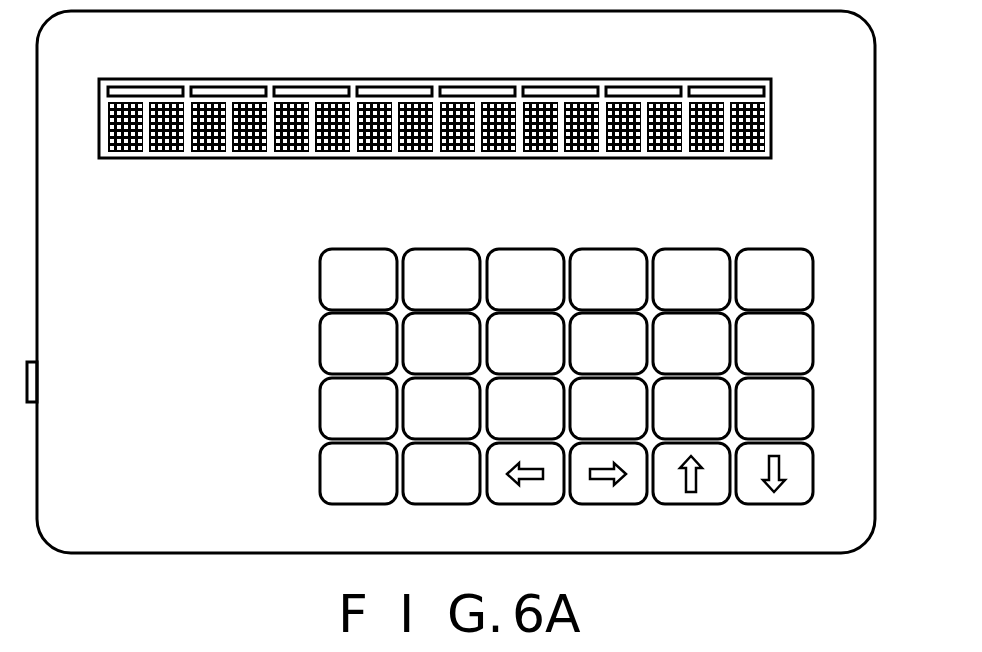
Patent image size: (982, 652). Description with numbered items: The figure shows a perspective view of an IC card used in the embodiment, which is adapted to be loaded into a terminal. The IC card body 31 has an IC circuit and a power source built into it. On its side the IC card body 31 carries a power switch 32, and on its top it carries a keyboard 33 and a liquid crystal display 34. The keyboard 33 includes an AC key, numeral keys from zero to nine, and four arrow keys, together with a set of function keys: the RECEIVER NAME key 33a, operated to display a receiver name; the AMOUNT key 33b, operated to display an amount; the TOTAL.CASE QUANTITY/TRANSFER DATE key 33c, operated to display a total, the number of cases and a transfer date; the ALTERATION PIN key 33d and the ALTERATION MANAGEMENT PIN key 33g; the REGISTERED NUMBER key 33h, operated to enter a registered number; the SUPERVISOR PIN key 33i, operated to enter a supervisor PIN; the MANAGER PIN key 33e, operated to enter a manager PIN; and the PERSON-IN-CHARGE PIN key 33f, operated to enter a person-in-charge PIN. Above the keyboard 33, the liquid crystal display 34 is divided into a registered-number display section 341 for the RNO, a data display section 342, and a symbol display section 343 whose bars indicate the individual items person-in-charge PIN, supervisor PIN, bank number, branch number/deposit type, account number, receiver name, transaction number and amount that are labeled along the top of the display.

The IC card body 31 is at (808, 553).
The power switch 32 is at (37, 392).
The keyboard 33 is at (568, 401).
The RECEIVER NAME key 33a is at (320, 342).
The AMOUNT key 33b is at (320, 407).
The TOTAL.CASE QUANTITY/TRANSFER DATE key 33c is at (320, 471).
The ALTERATION PIN key 33d is at (694, 250).
The MANAGER PIN key 33e is at (660, 320).
The PERSON-IN-CHARGE PIN key 33f is at (714, 440).
The ALTERATION MANAGEMENT PIN key 33g is at (774, 250).
The REGISTERED NUMBER key 33h is at (812, 346).
The SUPERVISOR PIN key 33i is at (812, 428).
The liquid crystal display 34 is at (443, 138).
The registered-number display section 341 is at (100, 188).
The data display section 342 is at (503, 184).
The symbol display section 343 is at (104, 84).